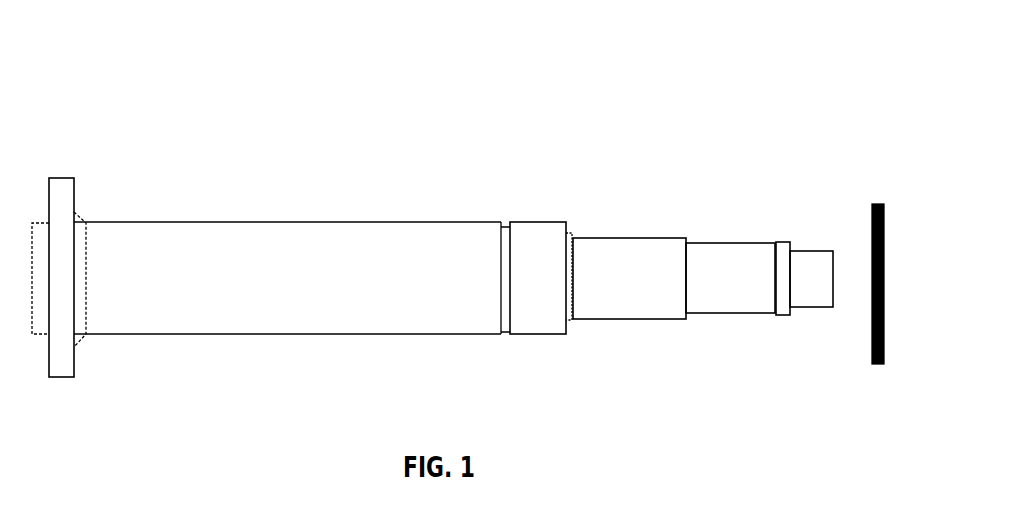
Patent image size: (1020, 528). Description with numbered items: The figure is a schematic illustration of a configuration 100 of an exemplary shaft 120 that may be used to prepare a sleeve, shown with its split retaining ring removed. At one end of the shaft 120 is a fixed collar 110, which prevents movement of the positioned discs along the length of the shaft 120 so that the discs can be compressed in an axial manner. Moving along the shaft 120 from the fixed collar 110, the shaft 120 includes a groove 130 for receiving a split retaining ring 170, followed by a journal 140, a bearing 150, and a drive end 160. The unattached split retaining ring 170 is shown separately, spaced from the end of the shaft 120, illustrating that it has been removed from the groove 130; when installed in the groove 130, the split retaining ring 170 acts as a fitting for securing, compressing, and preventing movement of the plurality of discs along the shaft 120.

The configuration 100 is at (432, 165).
The fixed collar 110 is at (70, 190).
The shaft 120 is at (333, 248).
The groove 130 is at (508, 290).
The journal 140 is at (626, 242).
The bearing 150 is at (725, 248).
The drive end 160 is at (813, 253).
The split retaining ring 170 is at (874, 203).